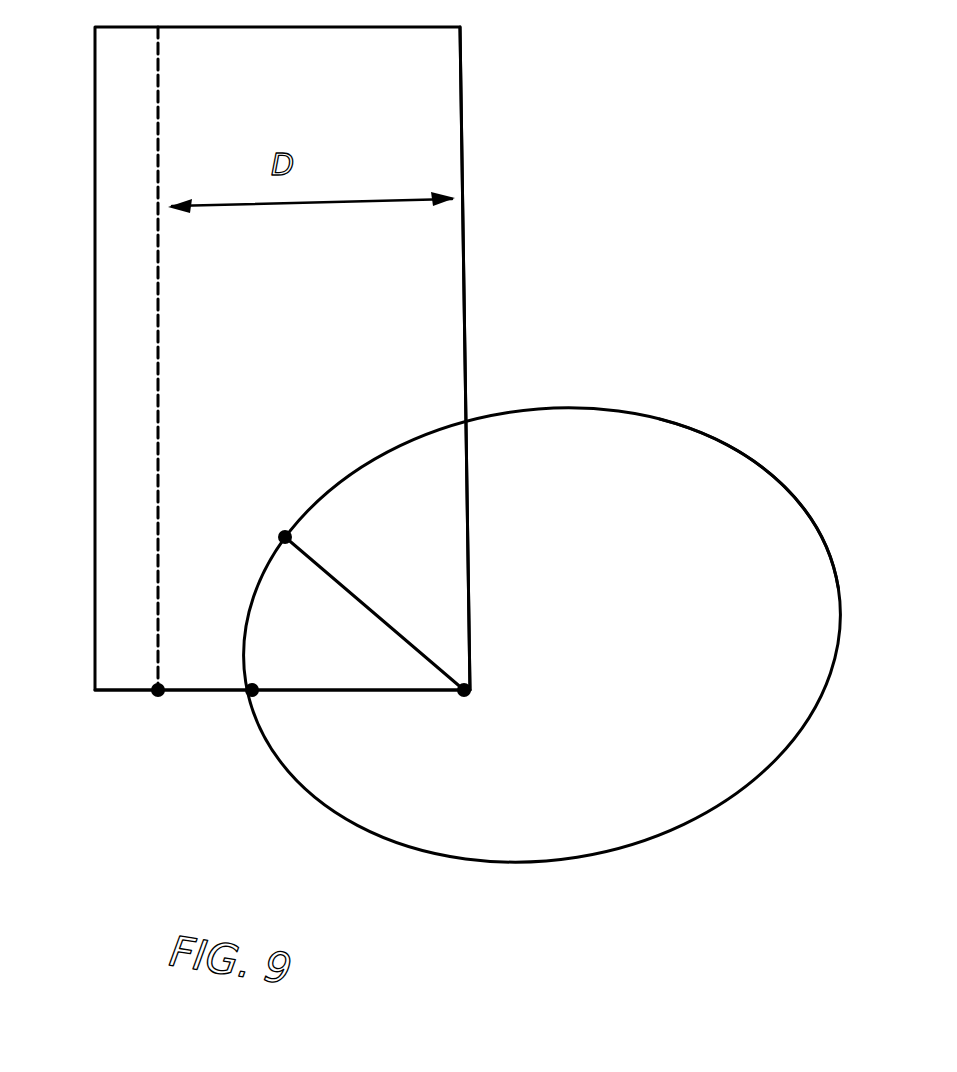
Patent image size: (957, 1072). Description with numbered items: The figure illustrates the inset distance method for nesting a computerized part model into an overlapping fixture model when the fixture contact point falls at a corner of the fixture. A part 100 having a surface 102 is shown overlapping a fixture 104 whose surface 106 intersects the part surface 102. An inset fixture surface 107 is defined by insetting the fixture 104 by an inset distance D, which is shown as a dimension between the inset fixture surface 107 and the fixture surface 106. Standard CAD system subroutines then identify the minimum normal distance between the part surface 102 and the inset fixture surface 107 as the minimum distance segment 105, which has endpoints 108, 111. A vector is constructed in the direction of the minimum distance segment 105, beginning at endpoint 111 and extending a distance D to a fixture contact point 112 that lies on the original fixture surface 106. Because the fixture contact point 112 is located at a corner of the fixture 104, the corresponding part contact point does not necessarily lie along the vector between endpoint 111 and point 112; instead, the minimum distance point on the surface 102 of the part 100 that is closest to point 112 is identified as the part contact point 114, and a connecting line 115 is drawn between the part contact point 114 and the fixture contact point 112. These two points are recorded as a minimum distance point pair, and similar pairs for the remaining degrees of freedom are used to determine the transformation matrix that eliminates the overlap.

The part 100 is at (717, 603).
The part surface 102 is at (713, 435).
The fixture 104 is at (407, 90).
The minimum distance segment 105 is at (206, 690).
The fixture surface 106 is at (460, 155).
The inset fixture surface 107 is at (158, 352).
The endpoint 108 is at (245, 697).
The endpoint 111 is at (153, 695).
The fixture contact point 112 is at (467, 693).
The part contact point 114 is at (285, 535).
The chord line 115 is at (353, 588).